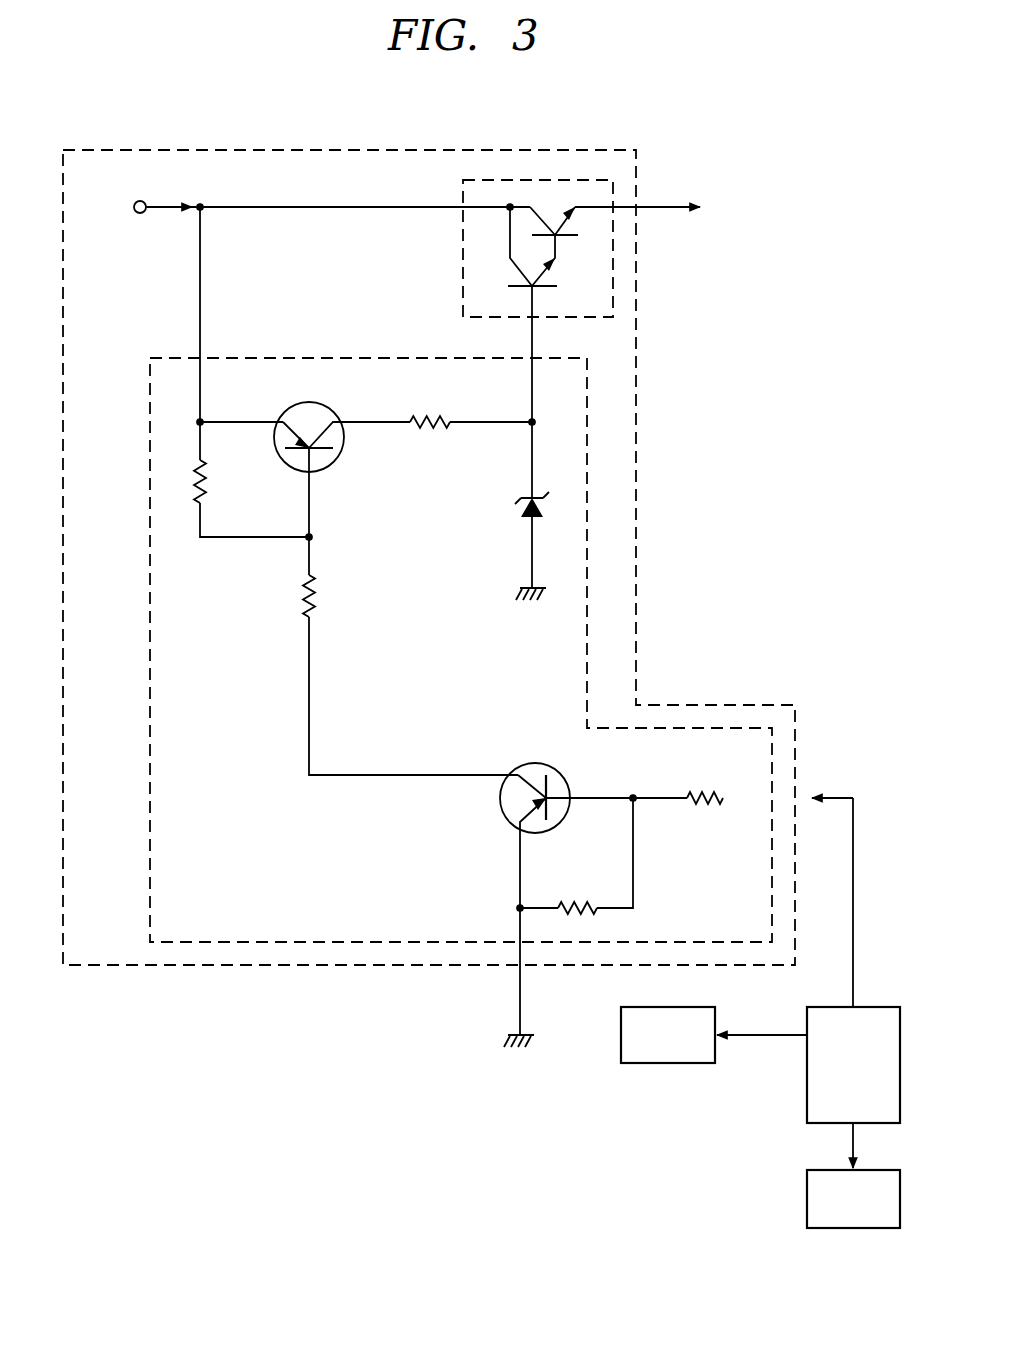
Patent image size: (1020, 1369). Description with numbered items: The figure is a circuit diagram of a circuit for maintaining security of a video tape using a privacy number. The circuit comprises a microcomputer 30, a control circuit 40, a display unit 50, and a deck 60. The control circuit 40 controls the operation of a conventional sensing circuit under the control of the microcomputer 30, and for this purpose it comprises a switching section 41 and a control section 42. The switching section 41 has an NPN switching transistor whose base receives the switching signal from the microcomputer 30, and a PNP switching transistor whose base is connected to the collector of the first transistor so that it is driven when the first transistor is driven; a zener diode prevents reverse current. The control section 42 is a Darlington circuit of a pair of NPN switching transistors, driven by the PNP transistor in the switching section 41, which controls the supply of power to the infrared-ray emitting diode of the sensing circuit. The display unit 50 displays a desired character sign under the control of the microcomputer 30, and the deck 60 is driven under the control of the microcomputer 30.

The microcomputer 30 is at (884, 1006).
The control circuit 40 is at (185, 967).
The switching section 41 is at (148, 762).
The control section 42 is at (461, 228).
The display unit 50 is at (806, 1197).
The deck 60 is at (670, 1064).